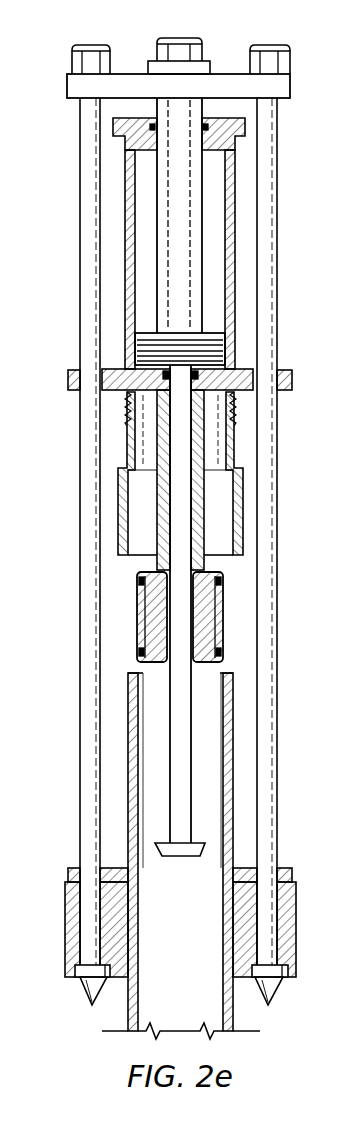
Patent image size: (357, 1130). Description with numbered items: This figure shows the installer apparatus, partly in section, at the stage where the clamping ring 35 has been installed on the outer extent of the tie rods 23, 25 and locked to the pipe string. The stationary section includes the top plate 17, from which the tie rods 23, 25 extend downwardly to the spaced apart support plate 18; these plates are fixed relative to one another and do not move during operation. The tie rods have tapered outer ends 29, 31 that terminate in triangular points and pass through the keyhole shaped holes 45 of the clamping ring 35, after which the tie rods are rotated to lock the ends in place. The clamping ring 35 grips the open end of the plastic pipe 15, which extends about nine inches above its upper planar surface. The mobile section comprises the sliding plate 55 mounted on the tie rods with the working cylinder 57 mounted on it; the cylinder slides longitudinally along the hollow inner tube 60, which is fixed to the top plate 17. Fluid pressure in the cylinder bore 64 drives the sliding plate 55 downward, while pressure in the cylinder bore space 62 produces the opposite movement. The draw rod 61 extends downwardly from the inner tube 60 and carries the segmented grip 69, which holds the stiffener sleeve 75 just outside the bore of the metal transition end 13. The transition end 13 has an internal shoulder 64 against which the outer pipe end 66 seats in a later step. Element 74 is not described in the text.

The metal transition end 13 is at (237, 448).
The plastic pipe 15 is at (128, 790).
The top plate 17 is at (67, 84).
The support plate 18 is at (68, 874).
The tie rod 23 is at (278, 594).
The tie rod 25 is at (80, 700).
The tapered outer end 29 is at (82, 992).
The tapered outer end 31 is at (278, 992).
The clamping ring 35 is at (300, 940).
The keyhole shaped hole 45 is at (275, 905).
The sliding plate 55 is at (68, 378).
The working cylinder 57 is at (127, 247).
The hollow inner tube 60 is at (155, 108).
The draw rod 61 is at (170, 752).
The cylinder bore space 62 is at (232, 256).
The internal shoulder 64 is at (235, 484).
The outer pipe end 66 is at (225, 674).
The segmented grip 69 is at (133, 572).
The cavity 74 is at (133, 496).
The stiffener sleeve 75 is at (137, 618).